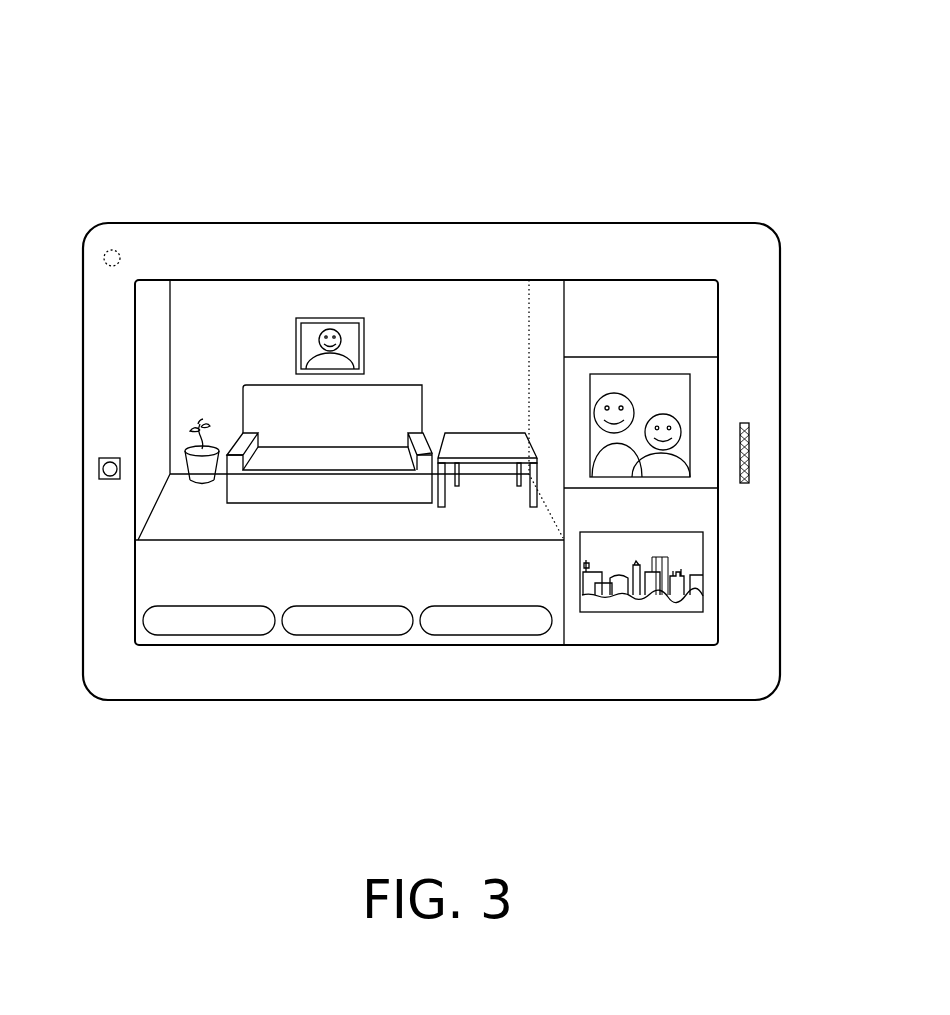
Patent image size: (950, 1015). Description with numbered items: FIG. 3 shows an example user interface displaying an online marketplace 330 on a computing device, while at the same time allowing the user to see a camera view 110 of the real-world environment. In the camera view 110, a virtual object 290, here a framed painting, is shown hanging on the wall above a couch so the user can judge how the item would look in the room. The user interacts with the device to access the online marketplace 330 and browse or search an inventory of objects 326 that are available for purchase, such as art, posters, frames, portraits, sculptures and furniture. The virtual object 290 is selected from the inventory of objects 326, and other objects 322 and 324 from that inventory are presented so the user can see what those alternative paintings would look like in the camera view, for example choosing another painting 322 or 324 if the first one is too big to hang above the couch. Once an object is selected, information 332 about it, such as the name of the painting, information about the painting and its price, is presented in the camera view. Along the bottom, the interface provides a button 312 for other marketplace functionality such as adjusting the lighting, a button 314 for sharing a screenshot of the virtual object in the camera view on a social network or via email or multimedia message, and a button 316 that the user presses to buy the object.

The camera view 110 is at (463, 325).
The virtual object 290 is at (296, 348).
The button 312 is at (223, 637).
The button 314 is at (350, 637).
The button 316 is at (486, 637).
The other object 322 is at (692, 413).
The other object 324 is at (703, 570).
The inventory of objects 326 is at (630, 300).
The online marketplace 330 is at (560, 625).
The information 332 is at (148, 572).